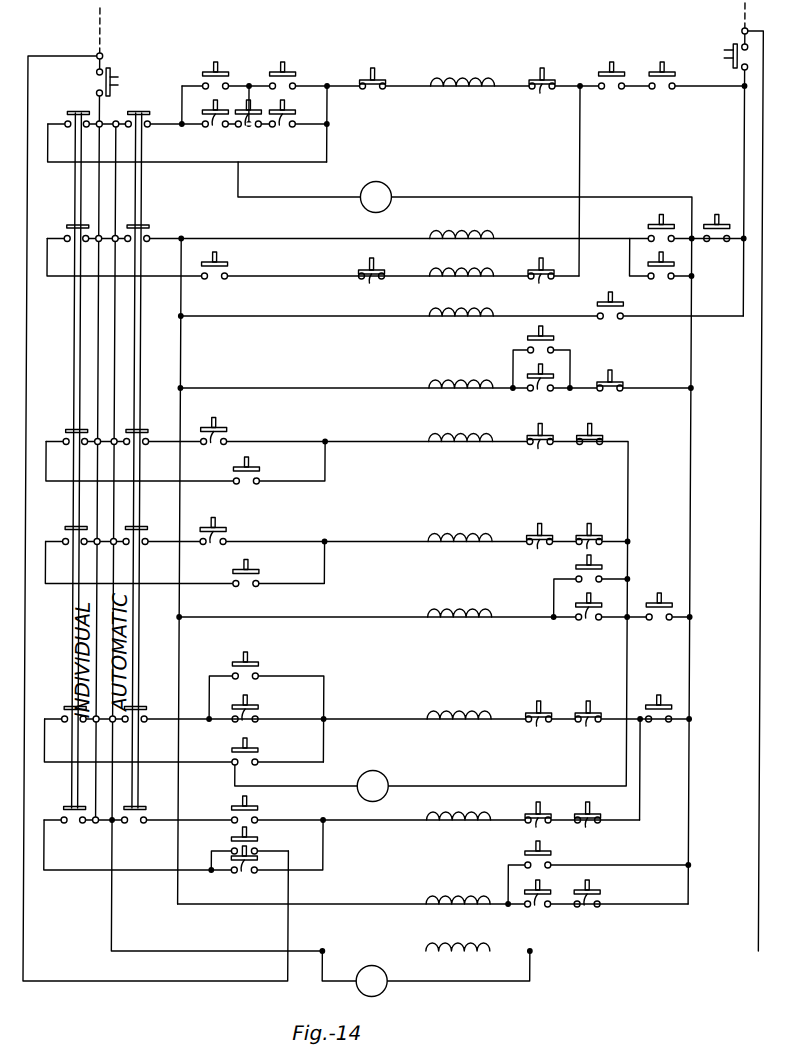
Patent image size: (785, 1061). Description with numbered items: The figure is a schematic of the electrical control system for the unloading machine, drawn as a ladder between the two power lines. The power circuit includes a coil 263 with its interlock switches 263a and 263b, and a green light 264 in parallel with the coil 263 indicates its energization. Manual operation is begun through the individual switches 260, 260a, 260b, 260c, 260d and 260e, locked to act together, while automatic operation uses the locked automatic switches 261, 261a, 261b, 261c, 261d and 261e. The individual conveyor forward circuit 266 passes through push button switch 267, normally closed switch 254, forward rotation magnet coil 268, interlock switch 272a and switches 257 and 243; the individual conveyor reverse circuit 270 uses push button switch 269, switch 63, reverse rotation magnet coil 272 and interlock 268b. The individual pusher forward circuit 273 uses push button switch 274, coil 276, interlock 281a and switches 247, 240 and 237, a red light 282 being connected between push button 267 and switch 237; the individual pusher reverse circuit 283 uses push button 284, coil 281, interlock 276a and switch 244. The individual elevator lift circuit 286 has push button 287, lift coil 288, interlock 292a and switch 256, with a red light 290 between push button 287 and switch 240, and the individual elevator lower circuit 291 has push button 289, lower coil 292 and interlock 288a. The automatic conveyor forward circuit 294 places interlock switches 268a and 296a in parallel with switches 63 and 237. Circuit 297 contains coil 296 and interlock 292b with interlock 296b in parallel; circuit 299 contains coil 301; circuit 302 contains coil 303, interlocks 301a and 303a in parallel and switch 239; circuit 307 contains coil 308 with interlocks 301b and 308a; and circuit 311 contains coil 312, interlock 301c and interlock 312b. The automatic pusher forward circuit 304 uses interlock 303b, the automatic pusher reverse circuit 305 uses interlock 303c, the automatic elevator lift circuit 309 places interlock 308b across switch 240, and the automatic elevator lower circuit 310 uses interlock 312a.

The switch 63 is at (218, 68).
The switch 237 is at (284, 70).
The normally closed switch 239 is at (616, 382).
The switch 240 is at (662, 598).
The normally open switch 243 is at (666, 68).
The switch 244 is at (581, 533).
The switch 247 is at (615, 326).
The normally closed switch 254 is at (375, 81).
The switch 256 is at (596, 708).
The switch 257 is at (616, 74).
The individual switch 260 is at (78, 112).
The individual switch 260a is at (76, 225).
The individual switch 260b is at (76, 429).
The individual switch 260c is at (76, 527).
The individual switch 260d is at (76, 707).
The individual switch 260e is at (76, 807).
The automatic switch 261 is at (142, 106).
The automatic switch 261a is at (145, 225).
The automatic switch 261b is at (142, 429).
The automatic switch 261c is at (142, 527).
The automatic switch 261d is at (142, 707).
The automatic switch 261e is at (142, 807).
The coil 263 is at (462, 958).
The interlock switch 263a is at (113, 78).
The interlock switch 263b is at (732, 66).
The green light 264 is at (392, 995).
The individual conveyor forward circuit 266 is at (383, 144).
The push button switch 267 is at (248, 168).
The forward rotation magnet coil 268 is at (452, 100).
The normally open interlock switch 268a is at (227, 126).
The normally closed interlock switch 268b is at (559, 284).
The push button switch 269 is at (229, 268).
The individual conveyor reverse circuit 270 is at (309, 301).
The reverse rotation magnet coil 272 is at (476, 284).
The normally closed interlock switch 272a is at (545, 80).
The individual pusher forward circuit 273 is at (381, 476).
The push button switch 274 is at (261, 473).
The forward rotation magnet coil 276 is at (465, 450).
The normally closed interlock switch 276a is at (536, 532).
The reverse rotation magnet coil 281 is at (465, 550).
The normally closed interlock switch 281a is at (532, 436).
The red light 282 is at (392, 194).
The individual pusher reverse circuit 283 is at (381, 576).
The push button switch 284 is at (261, 574).
The individual elevator lift circuit 286 is at (376, 753).
The push button switch 287 is at (261, 756).
The lift rotation magnet coil 288 is at (465, 727).
The normally closed interlock switch 288a is at (533, 808).
The push button 289 is at (247, 874).
The red light 290 is at (391, 781).
The individual elevator lower circuit 291 is at (381, 863).
The lower rotation magnet coil 292 is at (458, 828).
The normally closed interlock switch 292a is at (534, 708).
The normally open interlock switch 292b is at (655, 224).
The automatic conveyor forward circuit 294 is at (190, 126).
The coil 296 is at (468, 231).
The normally open interlock switch 296a is at (296, 126).
The normally open interlock switch 296b is at (668, 286).
The circuit 297 is at (346, 231).
The circuit 299 is at (391, 346).
The coil 301 is at (450, 323).
The normally open interlock switch 301a is at (543, 390).
The normally open interlock switch 301b is at (589, 621).
The normally open interlock switch 301c is at (549, 906).
The circuit 302 is at (396, 416).
The coil 303 is at (460, 380).
The normally open interlock switch 303a is at (561, 357).
The normally closed interlock switch 303b is at (212, 450).
The normally open interlock switch 303c is at (212, 549).
The automatic pusher forward circuit 304 is at (301, 434).
The automatic pusher reverse circuit 305 is at (321, 534).
The circuit 307 is at (411, 643).
The coil 308 is at (470, 625).
The normally open interlock switch 308a is at (581, 572).
The normally open interlock switch 308b is at (256, 670).
The automatic elevator lift circuit 309 is at (224, 753).
The automatic elevator lower circuit 310 is at (231, 809).
The circuit 311 is at (362, 906).
The coil 312 is at (465, 912).
The normally open interlock switch 312a is at (261, 816).
The normally open interlock switch 312b is at (545, 856).